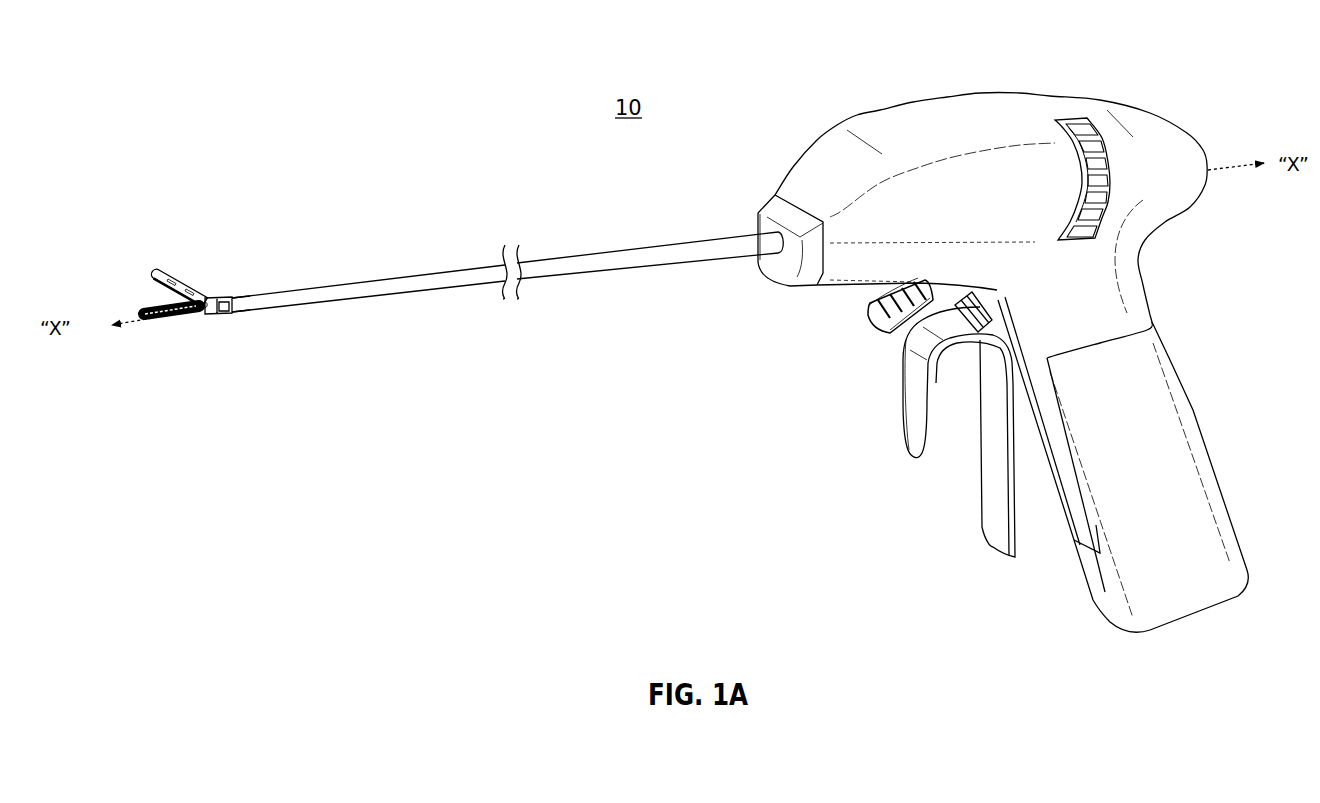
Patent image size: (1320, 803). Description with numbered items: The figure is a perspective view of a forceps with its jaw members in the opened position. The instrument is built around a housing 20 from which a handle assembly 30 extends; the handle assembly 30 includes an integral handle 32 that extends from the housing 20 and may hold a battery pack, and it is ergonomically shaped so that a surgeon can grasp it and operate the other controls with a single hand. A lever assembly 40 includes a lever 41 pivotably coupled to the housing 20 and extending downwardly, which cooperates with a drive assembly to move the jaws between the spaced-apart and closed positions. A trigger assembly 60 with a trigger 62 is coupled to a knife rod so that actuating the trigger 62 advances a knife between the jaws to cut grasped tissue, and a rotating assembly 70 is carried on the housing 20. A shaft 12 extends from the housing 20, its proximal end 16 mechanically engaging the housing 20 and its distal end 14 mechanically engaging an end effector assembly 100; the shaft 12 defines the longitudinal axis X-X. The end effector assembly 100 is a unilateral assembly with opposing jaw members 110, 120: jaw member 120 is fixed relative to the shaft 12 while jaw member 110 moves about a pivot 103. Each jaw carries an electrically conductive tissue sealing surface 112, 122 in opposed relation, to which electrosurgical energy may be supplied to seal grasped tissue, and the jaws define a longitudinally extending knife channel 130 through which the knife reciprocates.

The shaft 12 is at (413, 292).
The distal end 14 is at (250, 295).
The proximal end 16 is at (760, 238).
The housing 20 is at (972, 115).
The handle assembly 30 is at (1129, 465).
The integral handle 32 is at (1193, 437).
The lever assembly 40 is at (921, 432).
The lever 41 is at (993, 527).
The trigger assembly 60 is at (868, 324).
The trigger 62 is at (902, 338).
The rotating assembly 70 is at (1100, 188).
The end effector assembly 100 is at (187, 317).
The pivot 103 is at (217, 311).
The jaw member 110 is at (148, 265).
The electrically conductive tissue sealing surface 112 is at (163, 287).
The jaw member 120 is at (144, 338).
The electrically conductive tissue sealing surface 122 is at (155, 310).
The knife channel 130 is at (167, 323).